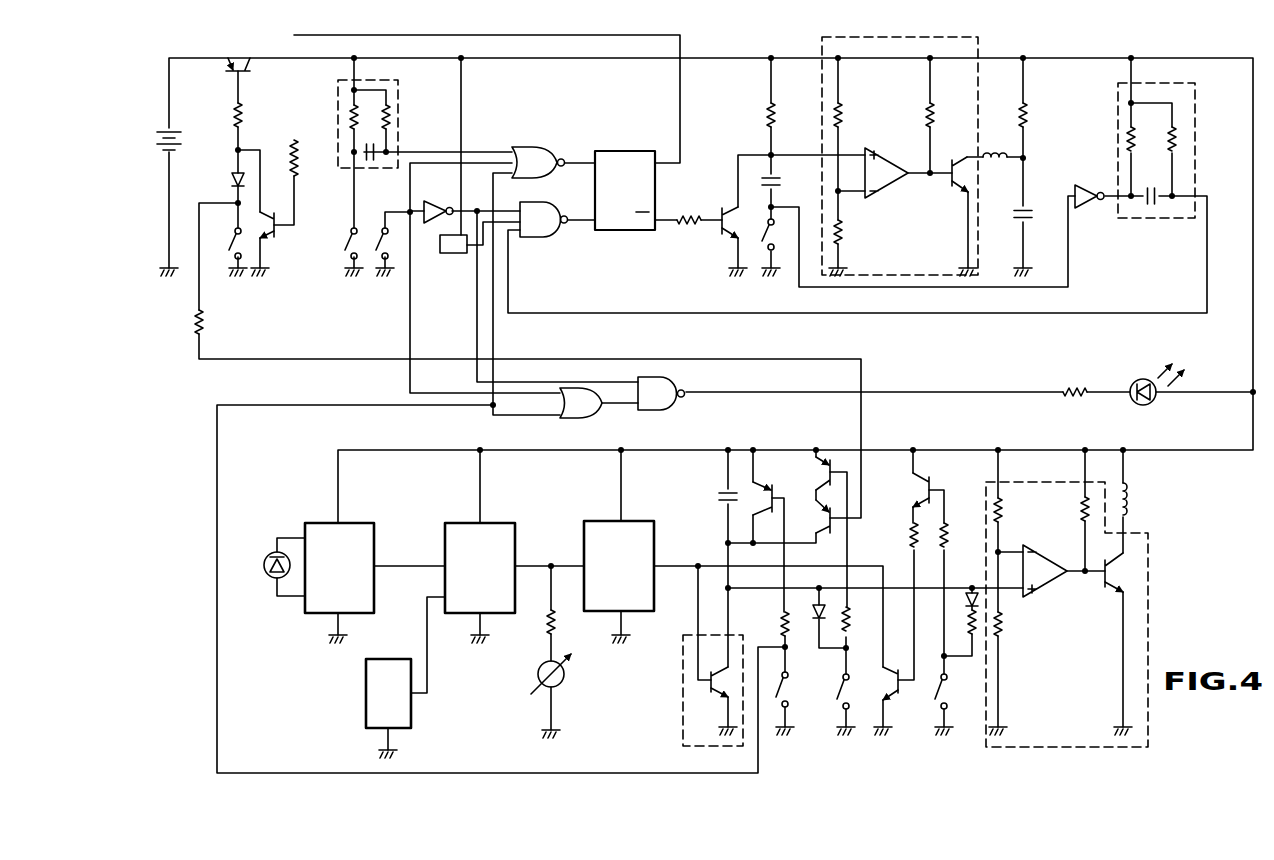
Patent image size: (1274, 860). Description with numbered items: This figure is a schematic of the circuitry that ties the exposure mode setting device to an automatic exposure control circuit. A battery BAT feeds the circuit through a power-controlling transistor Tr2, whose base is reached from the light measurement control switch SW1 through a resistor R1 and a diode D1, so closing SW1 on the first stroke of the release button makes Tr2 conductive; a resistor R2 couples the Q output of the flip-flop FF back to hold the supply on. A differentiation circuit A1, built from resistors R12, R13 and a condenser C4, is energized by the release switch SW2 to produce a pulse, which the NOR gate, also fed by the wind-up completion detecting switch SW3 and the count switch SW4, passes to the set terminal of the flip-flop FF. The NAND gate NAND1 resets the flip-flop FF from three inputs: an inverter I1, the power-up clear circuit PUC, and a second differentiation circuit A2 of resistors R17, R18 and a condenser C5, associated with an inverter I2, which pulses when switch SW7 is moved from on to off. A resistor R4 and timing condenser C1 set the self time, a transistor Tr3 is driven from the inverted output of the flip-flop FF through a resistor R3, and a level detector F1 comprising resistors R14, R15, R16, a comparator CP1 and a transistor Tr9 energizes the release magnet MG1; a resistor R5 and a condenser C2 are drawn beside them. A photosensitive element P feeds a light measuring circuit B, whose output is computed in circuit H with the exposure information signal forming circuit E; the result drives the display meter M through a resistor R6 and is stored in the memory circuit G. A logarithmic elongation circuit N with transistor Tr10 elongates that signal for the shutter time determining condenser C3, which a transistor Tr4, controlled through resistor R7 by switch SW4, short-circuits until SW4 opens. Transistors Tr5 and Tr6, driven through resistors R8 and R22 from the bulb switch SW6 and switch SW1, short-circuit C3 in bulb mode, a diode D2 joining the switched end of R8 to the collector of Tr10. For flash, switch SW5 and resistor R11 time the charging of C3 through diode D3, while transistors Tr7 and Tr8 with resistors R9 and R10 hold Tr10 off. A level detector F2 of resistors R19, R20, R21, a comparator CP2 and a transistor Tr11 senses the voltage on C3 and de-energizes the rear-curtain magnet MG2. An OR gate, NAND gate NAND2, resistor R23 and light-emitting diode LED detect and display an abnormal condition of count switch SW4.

The battery BAT is at (158, 163).
The transistor Tr2 is at (238, 62).
The resistor R1 is at (240, 108).
The diode D1 is at (230, 175).
The resistor R2 is at (302, 140).
The resistor R12 is at (352, 110).
The resistor R13 is at (390, 118).
The differentiation circuit A1 is at (400, 83).
The condenser C4 is at (370, 162).
The light measurement control switch SW1 is at (235, 255).
The release switch SW2 is at (350, 255).
The wind-up completion detecting switch SW3 is at (380, 255).
The resistor R22 is at (195, 320).
The NOR gate NOR is at (527, 147).
The flip-flop FF is at (620, 152).
The inverter I1 is at (434, 200).
The power-up clear circuit PUC is at (450, 253).
The NAND gate NAND1 is at (540, 237).
The resistor R3 is at (689, 216).
The transistor Tr3 is at (722, 230).
The resistor R4 is at (768, 115).
The timing condenser C1 is at (777, 182).
The switch SW7 is at (765, 252).
The level detector F1 is at (978, 40).
The resistor R14 is at (842, 112).
The resistor R15 is at (842, 235).
The comparator CP1 is at (895, 185).
The resistor R16 is at (934, 112).
The transistor Tr9 is at (954, 165).
The release magnet MG1 is at (1000, 152).
The resistor R5 is at (1028, 112).
The capacitor C2 is at (1014, 212).
The differentiation circuit A2 is at (1195, 90).
The resistor R17 is at (1128, 135).
The resistor R18 is at (1176, 140).
The condenser C5 is at (1151, 205).
The inverter I2 is at (1086, 208).
The resistor R23 is at (1073, 388).
The light-emitting diode LED is at (1152, 402).
The OR gate OR is at (577, 420).
The NAND gate NAND2 is at (680, 408).
The light measuring circuit B is at (355, 523).
The computer circuit H is at (497, 523).
The memory circuit G is at (635, 521).
The exposure information signal forming circuit E is at (366, 695).
The photosensitive element P is at (262, 554).
The display meter M is at (565, 678).
The resistor R6 is at (548, 625).
The logarithmic elongation circuit N is at (690, 640).
The transistor Tr10 is at (705, 685).
The shutter time determining condenser C3 is at (719, 495).
The transistor Tr4 is at (790, 480).
The transistor Tr5 is at (830, 460).
The transistor Tr6 is at (832, 530).
The transistor Tr7 is at (938, 470).
The resistor R7 is at (782, 622).
The resistor R8 is at (849, 622).
The resistor R9 is at (911, 532).
The resistor R10 is at (947, 533).
The diode D2 is at (816, 625).
The diode D3 is at (970, 592).
The resistor R11 is at (976, 625).
The count switch SW4 is at (781, 705).
The flash exposure switch SW5 is at (940, 705).
The bulb switch SW6 is at (842, 705).
The transistor Tr8 is at (893, 705).
The level detector F2 is at (1040, 482).
The resistor R19 is at (1002, 510).
The resistor R20 is at (1002, 625).
The resistor R21 is at (1082, 508).
The comparator CP2 is at (1057, 583).
The magnet MG2 is at (1130, 500).
The transistor Tr11 is at (1110, 575).